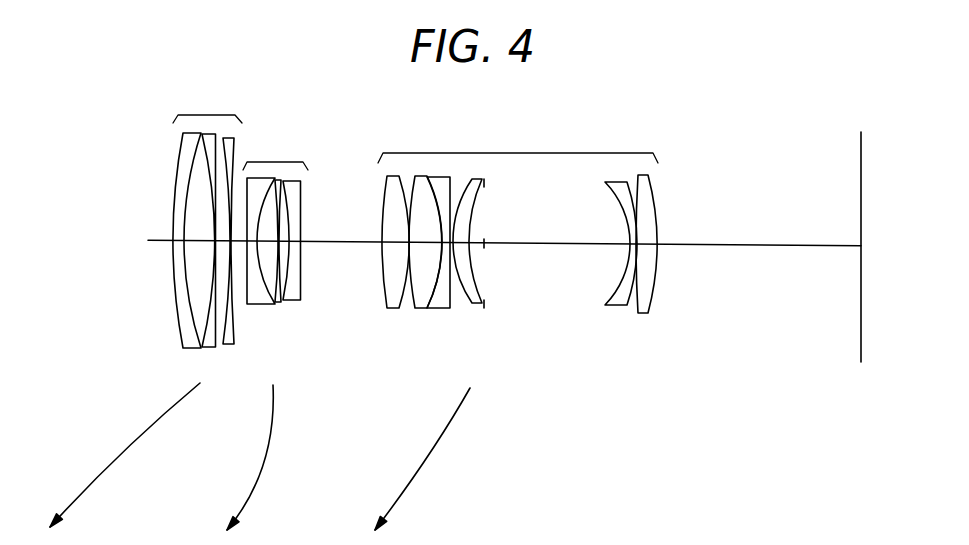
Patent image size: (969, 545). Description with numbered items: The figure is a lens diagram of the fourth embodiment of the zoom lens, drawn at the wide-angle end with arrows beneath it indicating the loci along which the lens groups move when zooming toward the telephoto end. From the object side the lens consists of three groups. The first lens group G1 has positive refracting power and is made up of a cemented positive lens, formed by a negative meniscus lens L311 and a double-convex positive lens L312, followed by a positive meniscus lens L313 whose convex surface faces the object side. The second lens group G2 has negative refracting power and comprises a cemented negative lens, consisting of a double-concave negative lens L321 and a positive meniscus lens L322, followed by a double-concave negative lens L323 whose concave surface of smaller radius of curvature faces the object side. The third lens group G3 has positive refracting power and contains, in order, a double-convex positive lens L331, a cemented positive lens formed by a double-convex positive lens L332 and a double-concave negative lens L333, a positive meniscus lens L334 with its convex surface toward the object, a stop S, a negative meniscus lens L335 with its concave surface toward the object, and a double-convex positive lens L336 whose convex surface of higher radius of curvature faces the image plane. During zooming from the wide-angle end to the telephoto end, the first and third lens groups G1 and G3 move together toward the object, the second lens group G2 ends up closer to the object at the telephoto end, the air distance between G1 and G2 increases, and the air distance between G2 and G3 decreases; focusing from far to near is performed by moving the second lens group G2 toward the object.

The first lens group G1 is at (207, 104).
The second lens group G2 is at (275, 150).
The third lens group G3 is at (518, 145).
The negative meniscus lens L311 is at (183, 330).
The double-convex positive lens L312 is at (204, 347).
The positive meniscus lens L313 is at (232, 345).
The double-concave negative lens L321 is at (255, 304).
The positive meniscus lens L322 is at (277, 304).
The double-concave negative lens L323 is at (296, 290).
The double-convex positive lens L331 is at (390, 308).
The double-convex positive lens L332 is at (415, 304).
The double-concave negative lens L333 is at (439, 308).
The positive meniscus lens L334 is at (475, 303).
The stop S is at (485, 303).
The negative meniscus lens L335 is at (608, 305).
The double-convex positive lens L336 is at (644, 315).